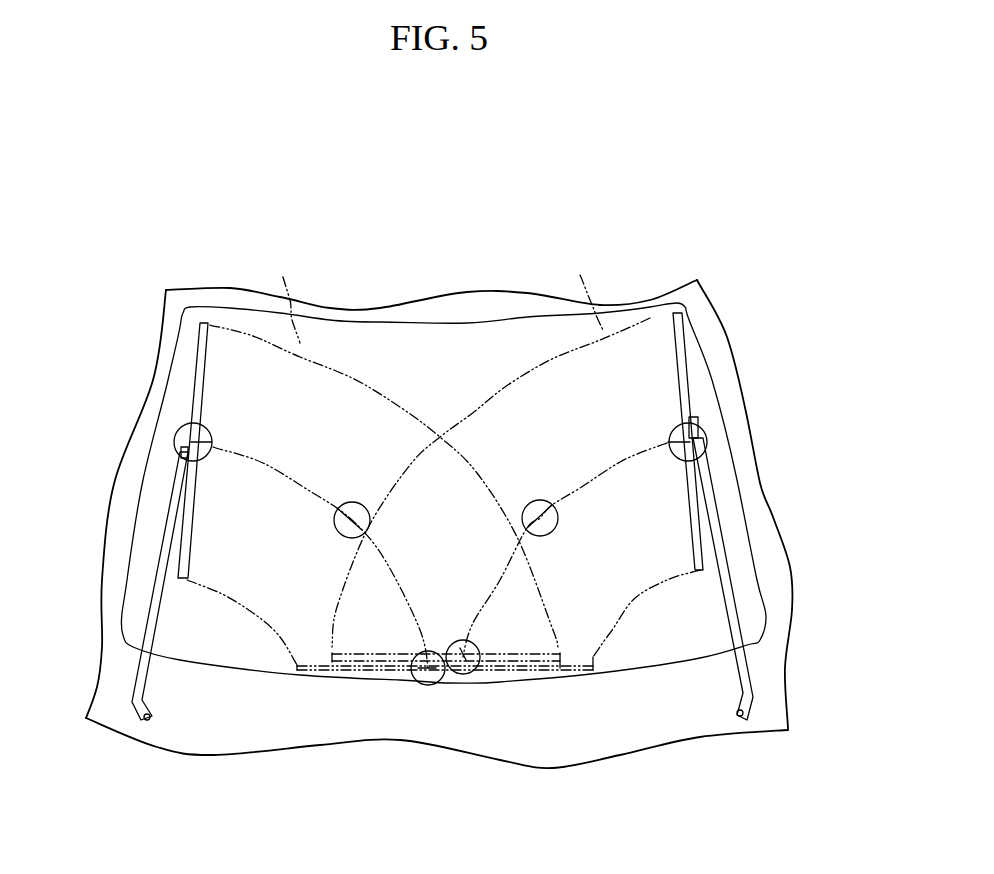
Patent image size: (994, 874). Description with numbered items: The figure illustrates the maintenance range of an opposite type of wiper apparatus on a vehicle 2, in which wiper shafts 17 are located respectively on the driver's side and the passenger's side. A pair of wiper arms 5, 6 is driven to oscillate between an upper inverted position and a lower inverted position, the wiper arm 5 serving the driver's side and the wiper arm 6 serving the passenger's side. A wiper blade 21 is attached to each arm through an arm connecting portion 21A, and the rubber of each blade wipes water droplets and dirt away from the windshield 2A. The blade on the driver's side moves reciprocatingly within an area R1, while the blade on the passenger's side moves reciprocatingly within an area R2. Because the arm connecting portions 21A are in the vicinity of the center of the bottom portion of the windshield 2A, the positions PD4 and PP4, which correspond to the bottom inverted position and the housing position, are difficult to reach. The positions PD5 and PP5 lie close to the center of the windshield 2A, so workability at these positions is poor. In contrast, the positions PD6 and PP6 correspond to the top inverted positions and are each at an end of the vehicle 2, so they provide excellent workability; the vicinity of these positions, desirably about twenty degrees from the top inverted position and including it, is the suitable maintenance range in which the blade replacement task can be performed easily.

The vehicle 2 is at (707, 350).
The windshield 2A is at (402, 347).
The wiper arm 5 is at (168, 512).
The wiper arm 6 is at (733, 598).
The wiper shaft 17 is at (148, 723).
The wiper blade 21 is at (200, 355).
The arm connecting portion 21A is at (182, 463).
The area R1 is at (283, 277).
The area R2 is at (580, 275).
The position PD4 is at (427, 687).
The position PD5 is at (360, 502).
The position PD6 is at (208, 435).
The position PP4 is at (467, 675).
The position PP5 is at (537, 502).
The position PP6 is at (677, 427).